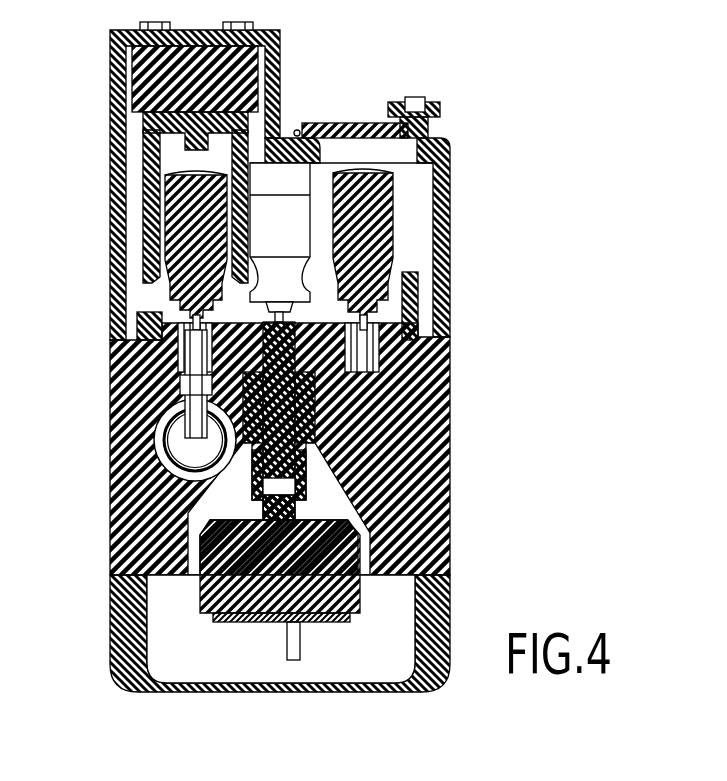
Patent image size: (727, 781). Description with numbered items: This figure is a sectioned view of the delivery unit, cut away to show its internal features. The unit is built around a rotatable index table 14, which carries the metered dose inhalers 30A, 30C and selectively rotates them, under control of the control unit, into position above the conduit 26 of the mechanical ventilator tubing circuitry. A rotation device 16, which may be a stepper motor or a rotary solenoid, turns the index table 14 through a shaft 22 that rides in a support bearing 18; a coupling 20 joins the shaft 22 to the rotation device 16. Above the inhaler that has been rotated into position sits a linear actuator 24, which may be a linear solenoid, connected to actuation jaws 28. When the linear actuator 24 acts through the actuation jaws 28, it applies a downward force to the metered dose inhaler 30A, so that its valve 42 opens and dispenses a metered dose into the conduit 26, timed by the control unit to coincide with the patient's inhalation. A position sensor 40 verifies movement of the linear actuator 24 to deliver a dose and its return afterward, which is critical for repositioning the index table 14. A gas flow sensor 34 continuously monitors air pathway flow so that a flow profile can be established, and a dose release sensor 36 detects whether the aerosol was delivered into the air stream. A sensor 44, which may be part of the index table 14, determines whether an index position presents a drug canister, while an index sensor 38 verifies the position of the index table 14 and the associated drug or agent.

The index table 14 is at (280, 348).
The rotation device 16 is at (343, 580).
The support bearing 18 is at (317, 445).
The coupling 20 is at (300, 497).
The shaft 22 is at (303, 375).
The linear actuator 24 is at (162, 110).
The conduit 26 is at (192, 473).
The actuation jaws 28 is at (160, 180).
The metered dose inhaler 30A is at (183, 232).
The metered dose inhaler 30C is at (383, 222).
The gas flow sensor 34 is at (180, 432).
The dose release sensor 36 is at (190, 447).
The index sensor 38 is at (228, 622).
The position sensor 40 is at (258, 68).
The valve 42 is at (163, 332).
The sensor 44 is at (340, 348).